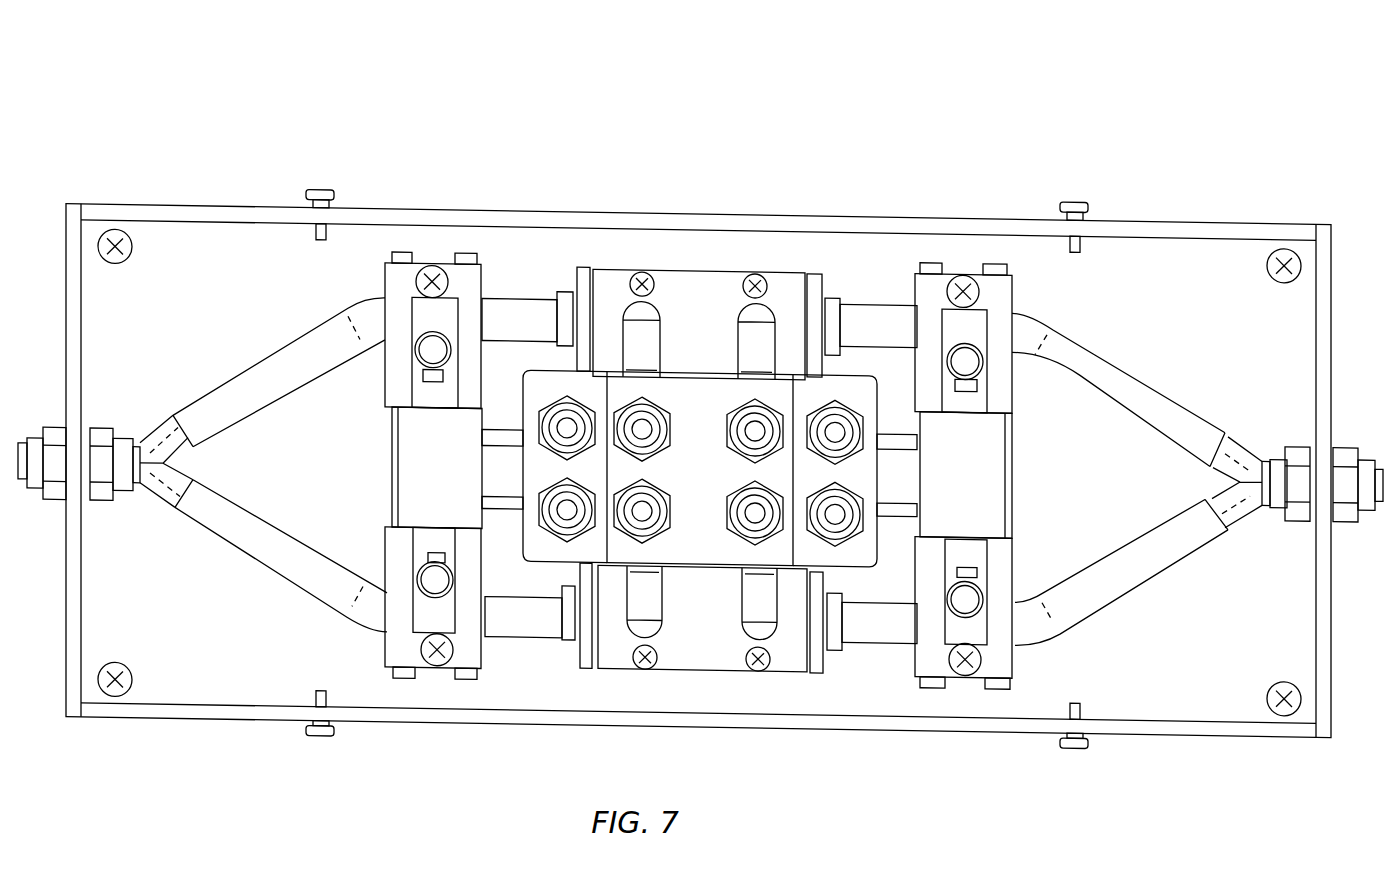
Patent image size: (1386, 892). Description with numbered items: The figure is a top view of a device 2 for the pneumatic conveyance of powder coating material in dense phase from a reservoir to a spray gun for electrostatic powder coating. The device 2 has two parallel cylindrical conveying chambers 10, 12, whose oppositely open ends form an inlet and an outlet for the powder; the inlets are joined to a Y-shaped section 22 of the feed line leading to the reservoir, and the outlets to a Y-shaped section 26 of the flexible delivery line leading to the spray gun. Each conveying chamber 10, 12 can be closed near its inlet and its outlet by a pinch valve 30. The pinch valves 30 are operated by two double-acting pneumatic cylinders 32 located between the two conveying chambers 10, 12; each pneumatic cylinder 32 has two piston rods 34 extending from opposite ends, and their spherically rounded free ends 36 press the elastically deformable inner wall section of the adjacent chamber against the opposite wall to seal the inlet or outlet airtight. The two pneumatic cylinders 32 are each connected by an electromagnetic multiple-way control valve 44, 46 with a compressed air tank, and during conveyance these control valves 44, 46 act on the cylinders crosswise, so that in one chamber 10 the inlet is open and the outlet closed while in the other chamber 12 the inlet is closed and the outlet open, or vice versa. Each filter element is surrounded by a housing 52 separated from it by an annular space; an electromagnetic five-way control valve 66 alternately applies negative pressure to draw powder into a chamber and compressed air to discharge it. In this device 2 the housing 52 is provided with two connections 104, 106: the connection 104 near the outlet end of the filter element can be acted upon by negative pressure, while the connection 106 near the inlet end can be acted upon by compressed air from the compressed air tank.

The device 2 is at (906, 174).
The conveying chamber 10 is at (522, 318).
The conveying chamber 12 is at (877, 625).
The Y-shaped section 22 is at (1153, 372).
The Y-shaped section 26 is at (215, 552).
The pinch valve 30 is at (430, 331).
The double-acting pneumatic cylinder 32 is at (428, 476).
The piston rod 34 is at (433, 396).
The spherically rounded free end 36 is at (435, 584).
The electromagnetic multiple-way control valve 44 is at (540, 548).
The electromagnetic multiple-way control valve 46 is at (867, 544).
The housing 52 is at (778, 291).
The electromagnetic 5-way control valve 66 is at (620, 389).
The connection 104 is at (633, 313).
The connection 106 is at (755, 314).